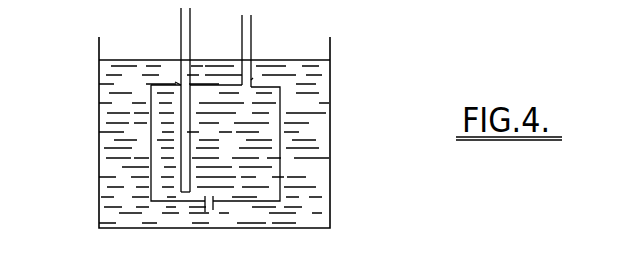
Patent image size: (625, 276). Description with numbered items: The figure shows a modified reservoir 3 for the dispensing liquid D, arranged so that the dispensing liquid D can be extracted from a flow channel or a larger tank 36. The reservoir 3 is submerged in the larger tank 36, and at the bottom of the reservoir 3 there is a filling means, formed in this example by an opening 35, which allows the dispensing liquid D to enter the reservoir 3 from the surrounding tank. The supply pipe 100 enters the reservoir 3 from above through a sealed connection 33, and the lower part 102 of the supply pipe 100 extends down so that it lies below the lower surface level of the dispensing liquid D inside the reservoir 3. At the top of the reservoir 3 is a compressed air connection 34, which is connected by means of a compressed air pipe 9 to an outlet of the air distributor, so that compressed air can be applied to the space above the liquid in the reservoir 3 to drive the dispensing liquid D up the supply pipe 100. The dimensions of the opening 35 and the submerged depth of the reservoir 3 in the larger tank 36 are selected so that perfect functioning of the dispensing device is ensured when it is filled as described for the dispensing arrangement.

The reservoir 3 is at (280, 103).
The compressed air pipe 9 is at (253, 51).
The sealed connection 33 is at (175, 82).
The compressed air connection 34 is at (253, 80).
The opening 35 is at (213, 208).
The larger tank 36 is at (93, 178).
The supply pipe 100 is at (170, 100).
The lower part of the supply pipe 102 is at (182, 192).
The dispensing liquid D is at (307, 167).